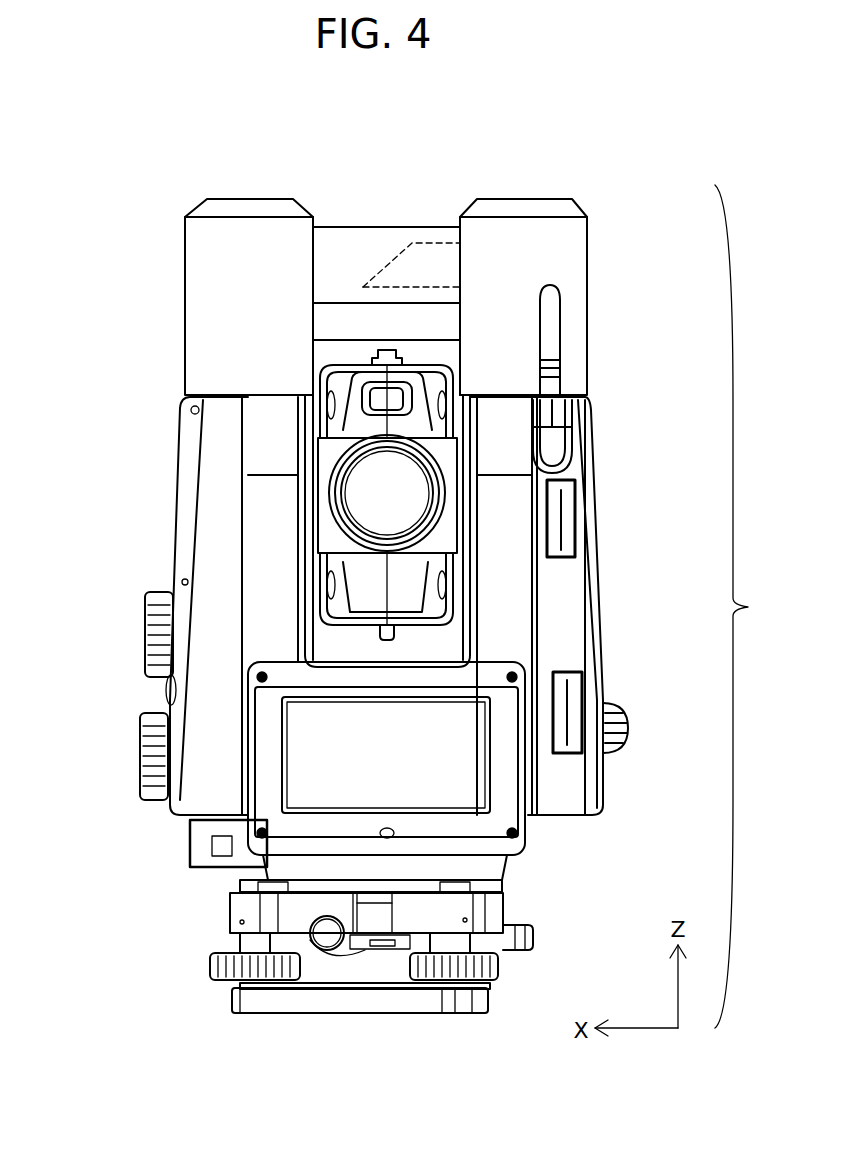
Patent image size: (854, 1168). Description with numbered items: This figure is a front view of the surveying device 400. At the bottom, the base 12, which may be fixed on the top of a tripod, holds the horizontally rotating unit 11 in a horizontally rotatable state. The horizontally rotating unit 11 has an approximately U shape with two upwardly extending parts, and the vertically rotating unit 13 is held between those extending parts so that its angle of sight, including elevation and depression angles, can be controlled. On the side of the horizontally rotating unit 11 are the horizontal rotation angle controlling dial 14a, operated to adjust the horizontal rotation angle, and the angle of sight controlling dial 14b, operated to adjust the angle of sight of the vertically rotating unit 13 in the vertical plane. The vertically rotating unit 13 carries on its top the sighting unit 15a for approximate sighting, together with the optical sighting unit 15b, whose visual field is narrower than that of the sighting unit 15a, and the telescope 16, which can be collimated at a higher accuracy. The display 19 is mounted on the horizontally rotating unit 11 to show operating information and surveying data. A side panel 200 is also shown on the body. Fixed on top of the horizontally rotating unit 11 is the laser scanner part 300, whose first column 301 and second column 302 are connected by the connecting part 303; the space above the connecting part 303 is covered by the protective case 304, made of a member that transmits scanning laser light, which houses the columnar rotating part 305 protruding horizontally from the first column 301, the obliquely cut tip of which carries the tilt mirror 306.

The horizontally rotating unit 11 is at (210, 507).
The base 12 is at (250, 910).
The vertically rotating unit 13 is at (407, 597).
The horizontal rotation angle controlling dial 14a is at (148, 605).
The angle of sight controlling dial 14b is at (142, 730).
The sighting unit 15a is at (367, 352).
The optical sighting unit 15b is at (410, 383).
The telescope 16 is at (407, 487).
The display 19 is at (465, 795).
The attachment / side panel 200 is at (602, 528).
The laser scanner part 300 is at (346, 267).
The first column 301 is at (523, 242).
The second column 302 is at (213, 233).
The connecting part 303 is at (333, 322).
The protective case 304 is at (333, 227).
The rotating part 305 is at (437, 260).
The tilt mirror 306 is at (390, 258).
The surveying device 400 is at (757, 606).